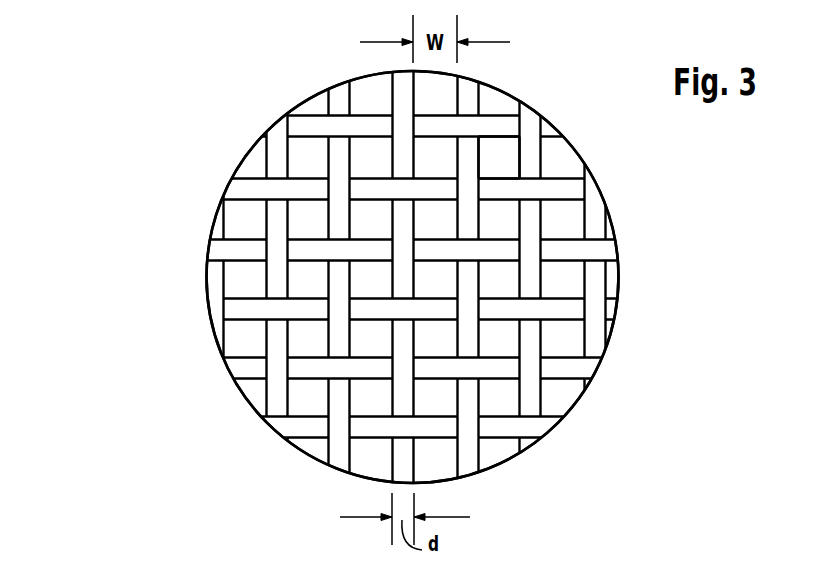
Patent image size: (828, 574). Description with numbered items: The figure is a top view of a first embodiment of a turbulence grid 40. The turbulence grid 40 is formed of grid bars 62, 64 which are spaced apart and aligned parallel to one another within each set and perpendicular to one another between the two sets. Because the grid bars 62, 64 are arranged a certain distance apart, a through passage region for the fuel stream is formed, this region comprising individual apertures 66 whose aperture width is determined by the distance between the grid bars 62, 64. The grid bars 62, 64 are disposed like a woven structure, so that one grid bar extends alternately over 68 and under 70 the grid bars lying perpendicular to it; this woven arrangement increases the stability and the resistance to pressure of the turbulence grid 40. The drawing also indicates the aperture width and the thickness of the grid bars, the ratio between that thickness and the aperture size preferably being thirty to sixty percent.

The turbulence grid 40 is at (247, 122).
The grid bar 62 is at (522, 427).
The grid bar 64 is at (532, 390).
The aperture 66 is at (510, 160).
The over position of grid bar 68 is at (277, 250).
The under position of grid bar 70 is at (275, 197).